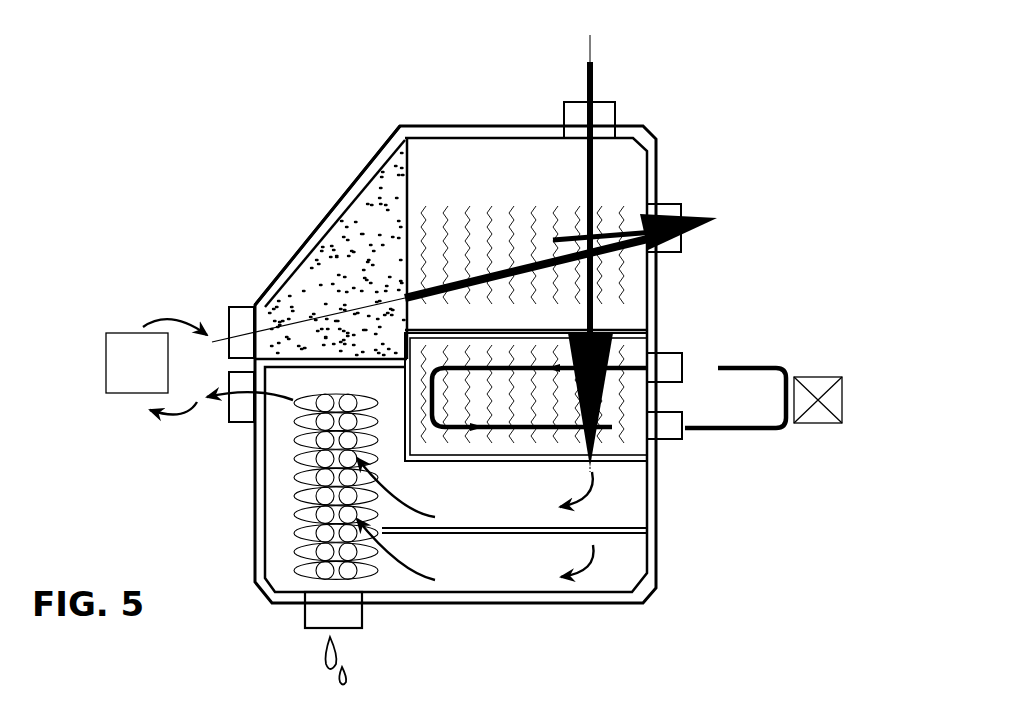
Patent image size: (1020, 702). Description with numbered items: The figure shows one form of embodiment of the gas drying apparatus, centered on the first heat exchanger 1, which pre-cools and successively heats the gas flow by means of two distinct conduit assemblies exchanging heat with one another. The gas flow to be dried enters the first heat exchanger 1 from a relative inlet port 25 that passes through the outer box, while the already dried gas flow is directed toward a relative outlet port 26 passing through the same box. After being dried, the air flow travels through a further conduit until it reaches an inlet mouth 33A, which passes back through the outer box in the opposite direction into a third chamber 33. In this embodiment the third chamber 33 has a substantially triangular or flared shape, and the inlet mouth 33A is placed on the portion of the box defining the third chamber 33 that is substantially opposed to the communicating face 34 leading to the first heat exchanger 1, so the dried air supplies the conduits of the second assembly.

The first heat exchanger 1 is at (518, 208).
The inlet port 25 is at (605, 105).
The outlet port 26 is at (681, 242).
The third chamber 33 is at (363, 235).
The inlet mouth 33A is at (238, 323).
The communicating face 34 is at (410, 183).